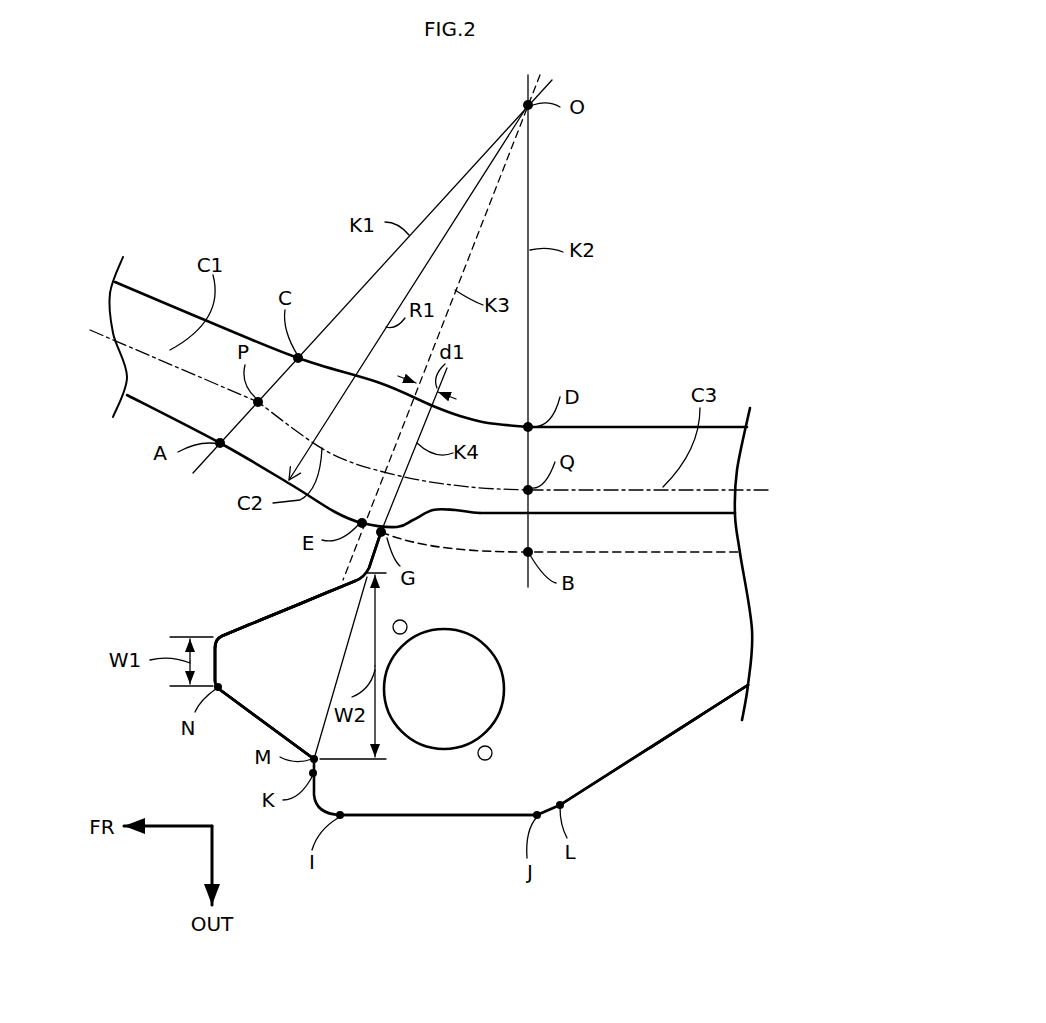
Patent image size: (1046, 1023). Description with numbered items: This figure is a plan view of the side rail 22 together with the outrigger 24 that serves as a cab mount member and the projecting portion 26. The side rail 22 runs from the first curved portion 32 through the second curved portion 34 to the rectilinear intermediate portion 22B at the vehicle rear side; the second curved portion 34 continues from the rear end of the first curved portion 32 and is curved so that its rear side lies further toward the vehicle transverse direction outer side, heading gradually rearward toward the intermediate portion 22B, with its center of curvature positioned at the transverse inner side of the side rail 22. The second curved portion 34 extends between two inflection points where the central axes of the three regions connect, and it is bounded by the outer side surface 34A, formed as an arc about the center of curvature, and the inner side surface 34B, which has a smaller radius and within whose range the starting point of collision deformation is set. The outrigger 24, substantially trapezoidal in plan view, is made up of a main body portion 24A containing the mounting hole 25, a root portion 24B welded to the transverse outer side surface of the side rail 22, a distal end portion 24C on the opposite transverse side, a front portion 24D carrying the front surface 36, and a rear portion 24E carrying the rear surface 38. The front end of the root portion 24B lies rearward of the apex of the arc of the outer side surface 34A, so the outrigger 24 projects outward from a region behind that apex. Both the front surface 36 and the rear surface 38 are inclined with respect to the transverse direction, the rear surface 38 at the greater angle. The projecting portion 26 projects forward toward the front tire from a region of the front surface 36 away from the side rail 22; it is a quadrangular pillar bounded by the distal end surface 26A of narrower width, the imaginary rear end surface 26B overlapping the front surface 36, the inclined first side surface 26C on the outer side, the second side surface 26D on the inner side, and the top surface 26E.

The side rail 22 is at (623, 536).
The intermediate portion 22B is at (750, 410).
The outrigger 24 is at (515, 717).
The main body portion 24A is at (593, 682).
The root portion 24B is at (643, 562).
The distal end portion 24C is at (435, 818).
The front portion 24D is at (353, 656).
The rear portion 24E is at (693, 705).
The mounting hole 25 is at (503, 662).
The projecting portion 26 is at (241, 675).
The distal end surface 26A is at (213, 657).
The rear end surface 26B is at (332, 687).
The first side surface 26C is at (263, 730).
The second side surface 26D is at (250, 648).
The top surface 26E is at (223, 638).
The first curved portion 32 is at (140, 282).
The second curved portion 34 is at (406, 428).
The outer side surface 34A is at (326, 512).
The inner side surface 34B is at (488, 422).
The front surface 36 is at (367, 562).
The rear surface 38 is at (673, 735).